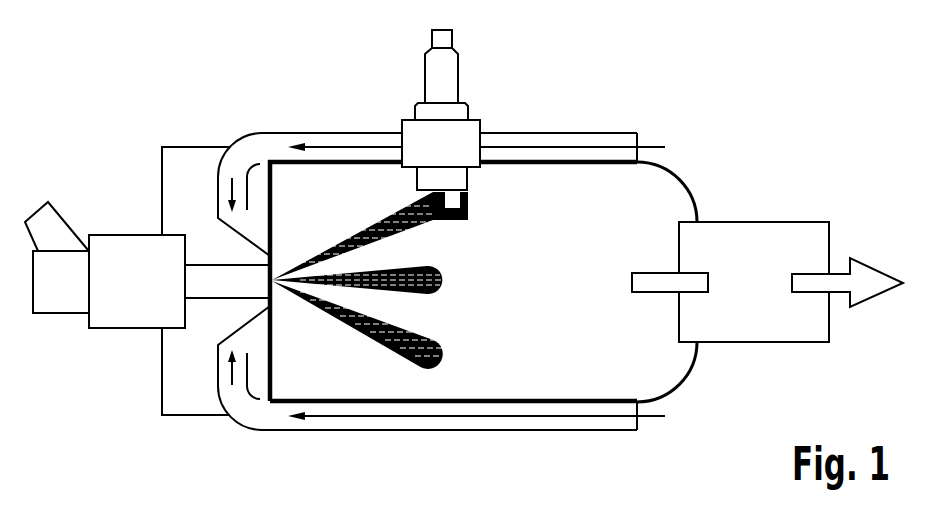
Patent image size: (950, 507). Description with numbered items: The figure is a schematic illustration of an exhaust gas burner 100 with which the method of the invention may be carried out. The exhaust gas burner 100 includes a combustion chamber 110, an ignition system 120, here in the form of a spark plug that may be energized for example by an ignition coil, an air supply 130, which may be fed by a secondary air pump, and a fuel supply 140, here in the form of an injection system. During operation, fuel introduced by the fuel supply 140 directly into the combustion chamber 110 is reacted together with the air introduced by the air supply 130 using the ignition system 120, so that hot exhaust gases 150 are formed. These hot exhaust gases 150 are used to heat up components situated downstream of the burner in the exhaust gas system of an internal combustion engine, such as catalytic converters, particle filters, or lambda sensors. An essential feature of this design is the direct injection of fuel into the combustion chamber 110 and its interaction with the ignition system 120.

The exhaust gas burner 100 is at (464, 217).
The combustion chamber 110 is at (556, 297).
The ignition system 120 is at (448, 72).
The air supply 130 is at (653, 145).
The fuel supply 140 is at (160, 298).
The hot exhaust gases 150 is at (776, 298).